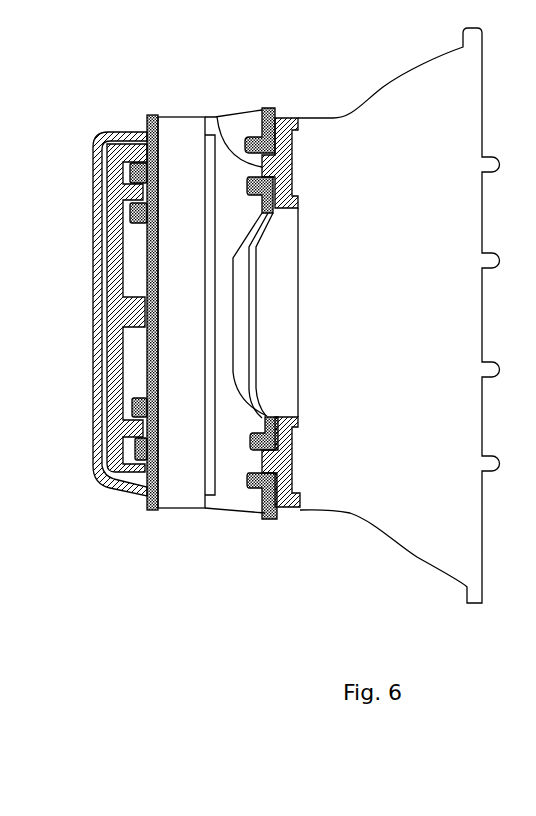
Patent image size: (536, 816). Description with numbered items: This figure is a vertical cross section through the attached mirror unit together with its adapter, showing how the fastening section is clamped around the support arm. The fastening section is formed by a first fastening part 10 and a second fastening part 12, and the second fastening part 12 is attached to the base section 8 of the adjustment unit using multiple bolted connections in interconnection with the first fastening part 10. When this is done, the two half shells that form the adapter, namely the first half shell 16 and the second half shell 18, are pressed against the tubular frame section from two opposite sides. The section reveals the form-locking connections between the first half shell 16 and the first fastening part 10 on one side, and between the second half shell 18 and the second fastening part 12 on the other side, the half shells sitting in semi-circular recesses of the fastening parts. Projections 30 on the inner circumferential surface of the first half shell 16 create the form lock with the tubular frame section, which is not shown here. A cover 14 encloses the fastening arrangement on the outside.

The base section 8 is at (350, 512).
The first fastening part 10 is at (287, 508).
The second fastening part 12 is at (140, 492).
The cover 14 is at (104, 486).
The first half shell 16 is at (242, 506).
The second half shell 18 is at (178, 503).
The projections 30 is at (242, 137).